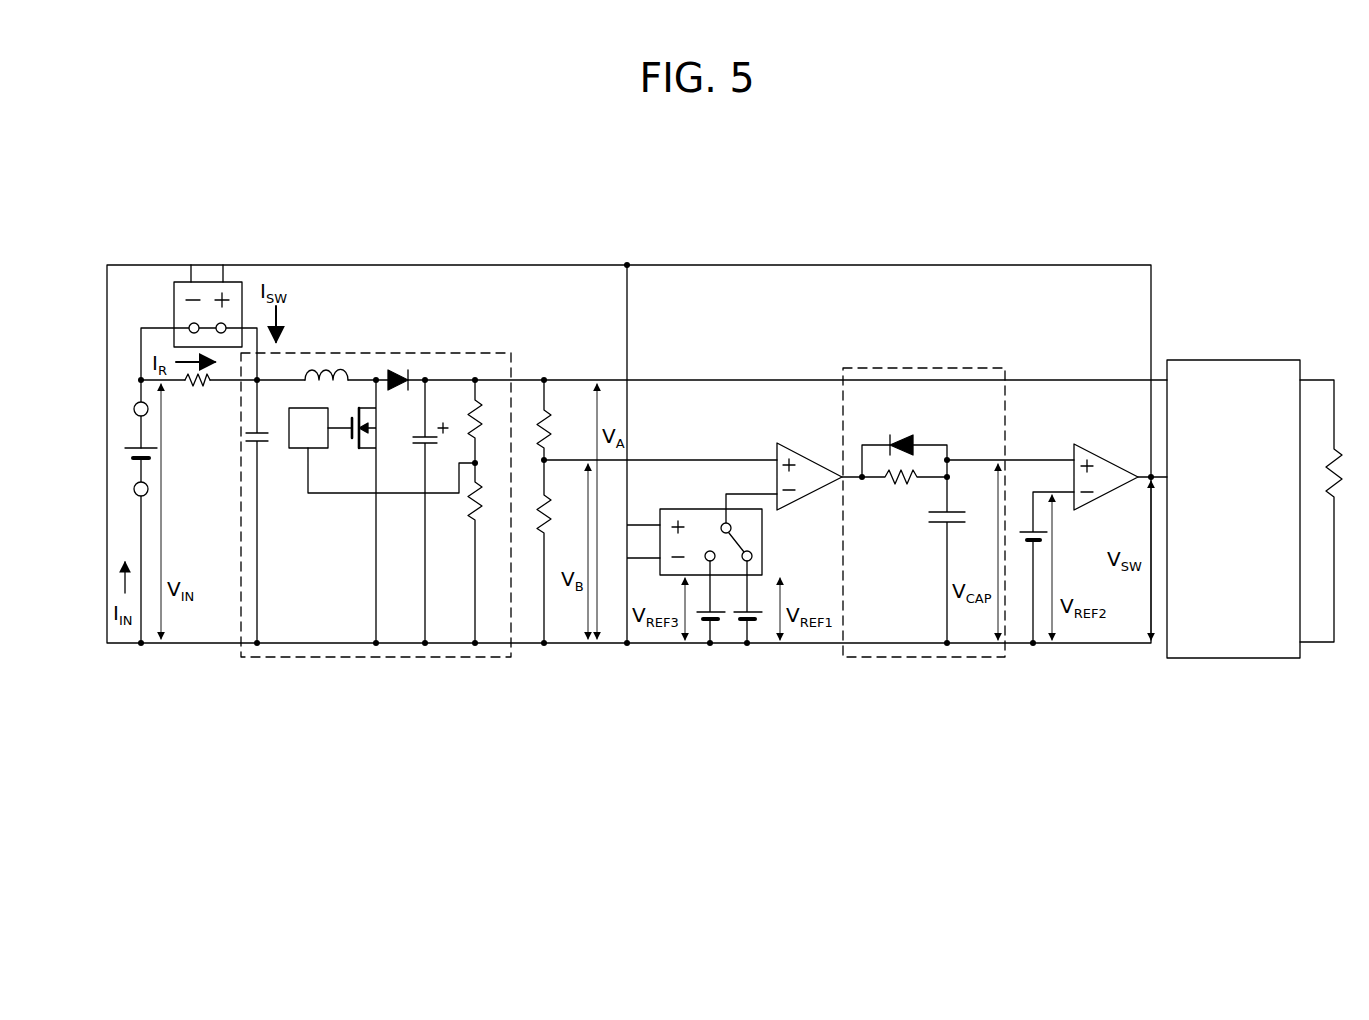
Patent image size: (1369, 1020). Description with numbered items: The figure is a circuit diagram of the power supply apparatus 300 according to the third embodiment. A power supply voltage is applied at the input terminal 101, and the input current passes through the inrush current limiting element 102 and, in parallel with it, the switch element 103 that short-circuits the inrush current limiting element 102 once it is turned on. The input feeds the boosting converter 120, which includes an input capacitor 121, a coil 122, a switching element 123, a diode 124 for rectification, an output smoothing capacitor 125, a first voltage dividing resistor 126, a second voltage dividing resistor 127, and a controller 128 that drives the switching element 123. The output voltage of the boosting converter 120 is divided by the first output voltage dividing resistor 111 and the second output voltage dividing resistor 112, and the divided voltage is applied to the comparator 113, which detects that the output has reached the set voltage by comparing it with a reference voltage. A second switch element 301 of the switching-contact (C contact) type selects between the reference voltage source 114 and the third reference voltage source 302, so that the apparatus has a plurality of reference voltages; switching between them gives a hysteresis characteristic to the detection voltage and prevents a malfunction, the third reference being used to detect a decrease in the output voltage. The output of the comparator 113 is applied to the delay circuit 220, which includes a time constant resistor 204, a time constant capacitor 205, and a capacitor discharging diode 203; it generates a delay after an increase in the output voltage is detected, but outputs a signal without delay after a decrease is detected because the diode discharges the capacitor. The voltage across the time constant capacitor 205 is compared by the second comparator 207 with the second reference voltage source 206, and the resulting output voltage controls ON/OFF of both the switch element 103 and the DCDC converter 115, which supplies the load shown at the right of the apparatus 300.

The input terminal 101 is at (134, 407).
The inrush current limiting element 102 is at (205, 386).
The switch element 103 is at (203, 281).
The first output voltage dividing resistor 111 is at (548, 420).
The second output voltage dividing resistor 112 is at (548, 511).
The comparator 113 is at (795, 447).
The reference voltage source 114 is at (756, 625).
The DCDC converter 115 is at (1217, 647).
The boosting converter 120 is at (477, 352).
The input capacitor 121 is at (264, 448).
The coil 122 is at (310, 378).
The switching element 123 is at (372, 432).
The diode for rectification 124 is at (407, 371).
The output smoothing capacitor 125 is at (422, 447).
The first voltage dividing resistor 126 is at (470, 425).
The second voltage dividing resistor 127 is at (472, 516).
The controller 128 is at (297, 450).
The capacitor discharging diode 203 is at (915, 437).
The time constant resistor 204 is at (891, 488).
The time constant capacitor 205 is at (933, 527).
The second reference voltage source 206 is at (1028, 527).
The second comparator 207 is at (1106, 436).
The delay circuit 220 is at (967, 366).
The power supply apparatus 300 is at (1283, 291).
The second switch element 301 is at (666, 507).
The third reference voltage source 302 is at (696, 625).